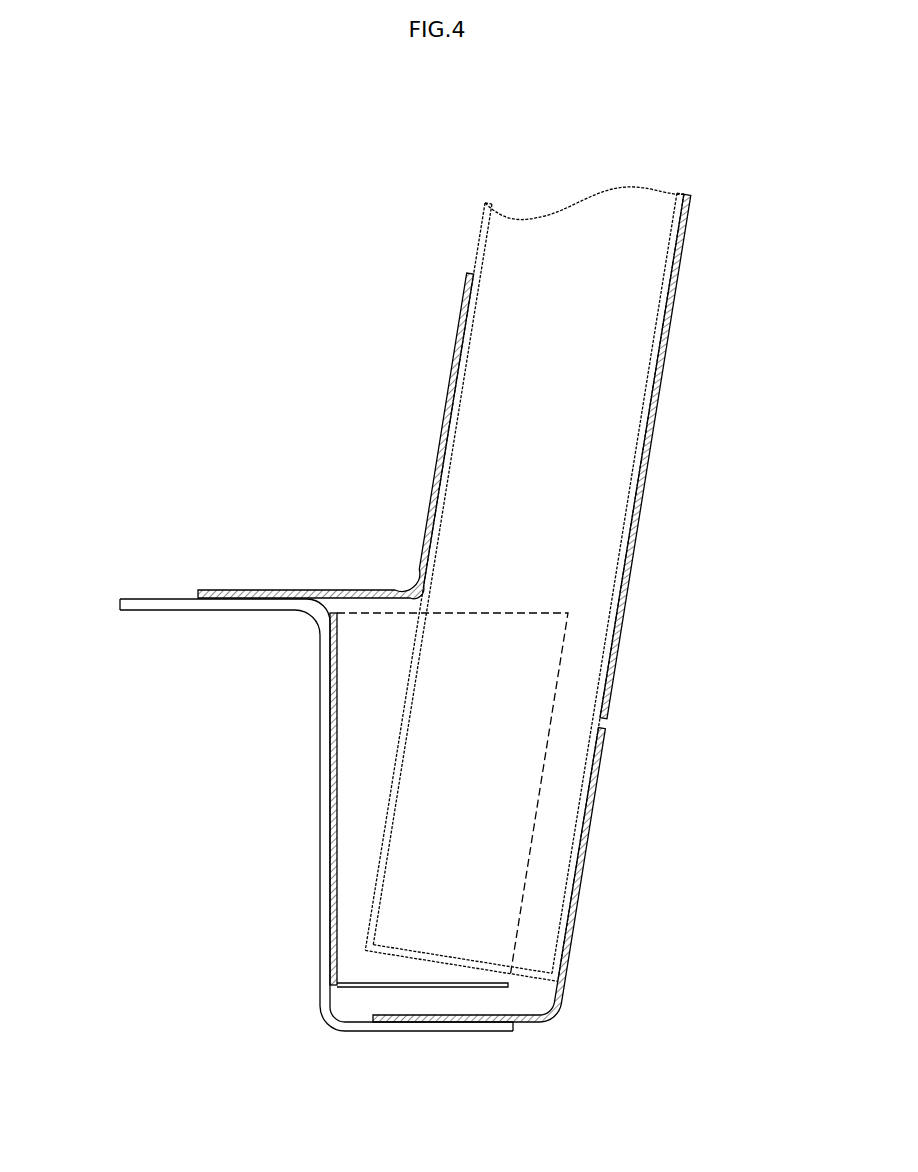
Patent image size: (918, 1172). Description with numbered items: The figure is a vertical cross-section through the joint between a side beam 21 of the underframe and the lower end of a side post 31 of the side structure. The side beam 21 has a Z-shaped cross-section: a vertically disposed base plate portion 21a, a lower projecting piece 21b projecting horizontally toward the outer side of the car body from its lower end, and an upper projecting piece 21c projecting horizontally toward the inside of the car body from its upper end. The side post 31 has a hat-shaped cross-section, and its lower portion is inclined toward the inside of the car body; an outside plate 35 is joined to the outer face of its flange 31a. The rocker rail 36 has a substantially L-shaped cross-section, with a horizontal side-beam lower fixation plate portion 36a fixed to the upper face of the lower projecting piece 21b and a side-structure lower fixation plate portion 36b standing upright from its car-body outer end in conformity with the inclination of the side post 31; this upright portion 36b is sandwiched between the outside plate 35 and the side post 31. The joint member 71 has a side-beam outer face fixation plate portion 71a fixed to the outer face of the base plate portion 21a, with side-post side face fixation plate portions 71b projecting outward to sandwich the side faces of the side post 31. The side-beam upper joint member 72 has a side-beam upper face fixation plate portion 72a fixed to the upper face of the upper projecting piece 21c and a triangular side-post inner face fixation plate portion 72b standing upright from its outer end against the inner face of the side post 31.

The side post 31 is at (524, 573).
The flange 31a is at (620, 522).
The outside plate 35 is at (632, 568).
The rocker rail 36 is at (528, 912).
The side-beam lower fixation plate portion 36a is at (458, 1022).
The side-structure lower fixation plate portion 36b is at (590, 828).
The side-beam upper joint member 72 is at (336, 436).
The side-beam upper face fixation plate portion 72a is at (326, 590).
The side-post inner face fixation plate portion 72b is at (455, 385).
The joint member 71 is at (374, 839).
The side-beam outer face fixation plate portion 71a is at (338, 672).
The side-post side face fixation plate portion 71b is at (357, 977).
The side beam 21 is at (309, 807).
The base plate portion 21a is at (320, 790).
The lower projecting piece 21b is at (413, 1031).
The upper projecting piece 21c is at (182, 612).